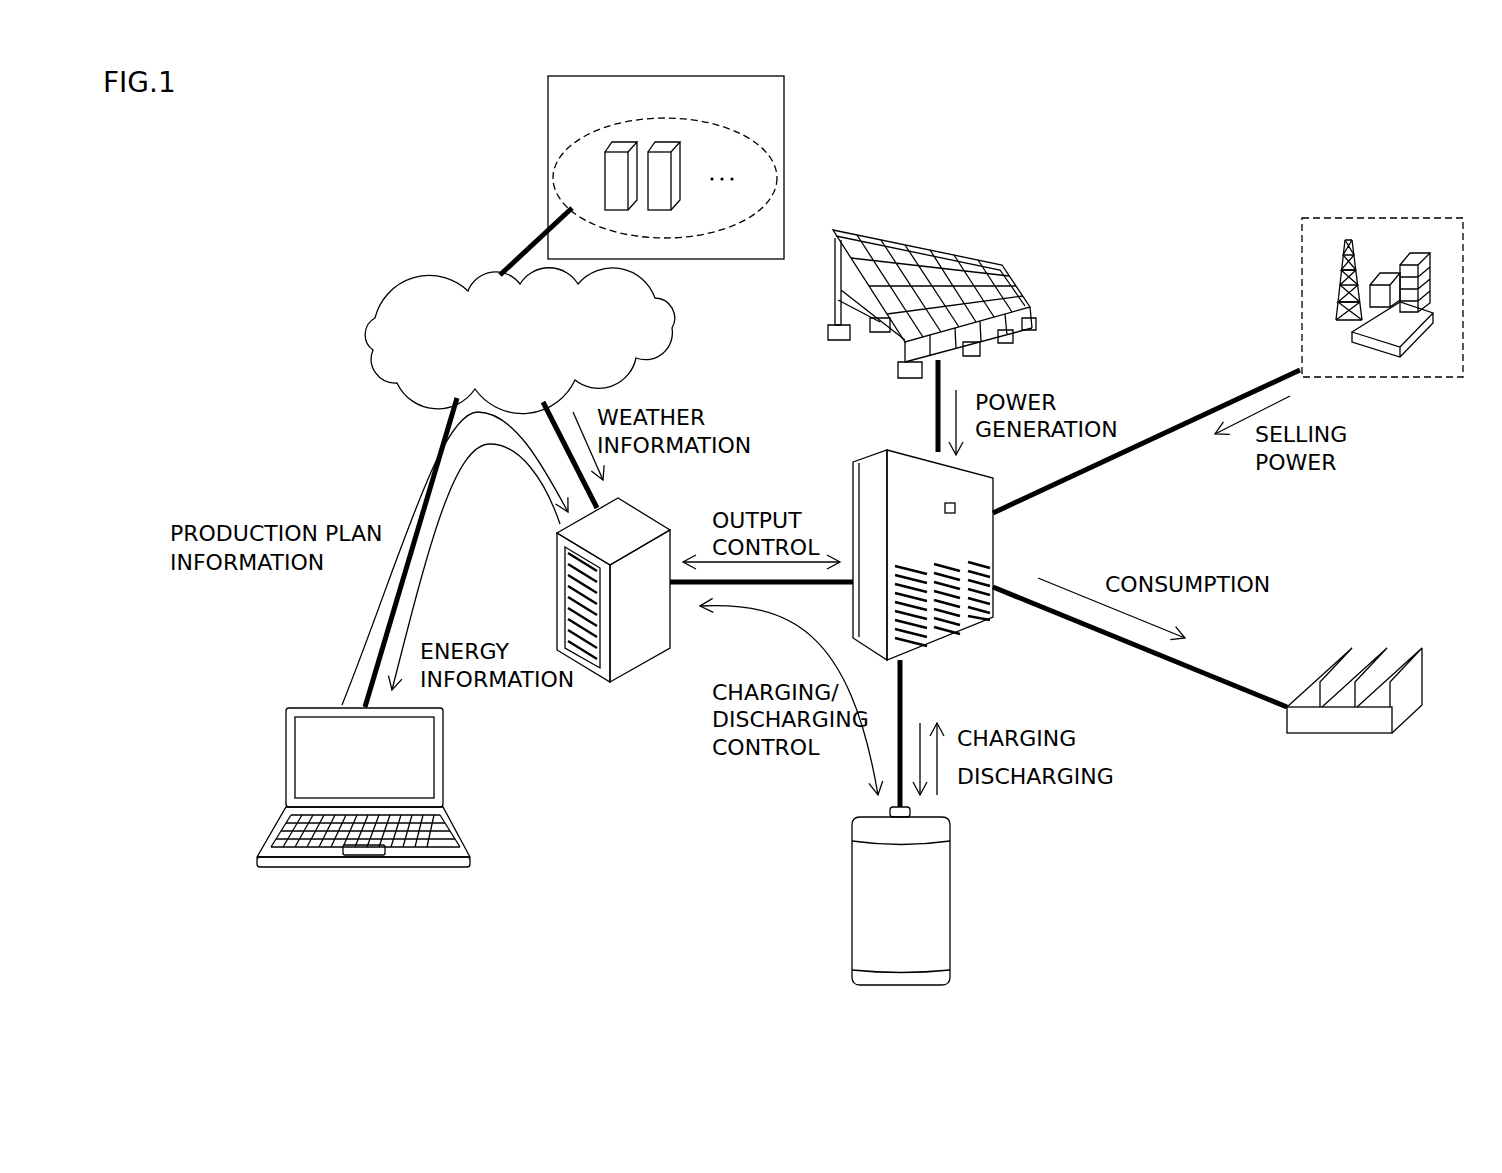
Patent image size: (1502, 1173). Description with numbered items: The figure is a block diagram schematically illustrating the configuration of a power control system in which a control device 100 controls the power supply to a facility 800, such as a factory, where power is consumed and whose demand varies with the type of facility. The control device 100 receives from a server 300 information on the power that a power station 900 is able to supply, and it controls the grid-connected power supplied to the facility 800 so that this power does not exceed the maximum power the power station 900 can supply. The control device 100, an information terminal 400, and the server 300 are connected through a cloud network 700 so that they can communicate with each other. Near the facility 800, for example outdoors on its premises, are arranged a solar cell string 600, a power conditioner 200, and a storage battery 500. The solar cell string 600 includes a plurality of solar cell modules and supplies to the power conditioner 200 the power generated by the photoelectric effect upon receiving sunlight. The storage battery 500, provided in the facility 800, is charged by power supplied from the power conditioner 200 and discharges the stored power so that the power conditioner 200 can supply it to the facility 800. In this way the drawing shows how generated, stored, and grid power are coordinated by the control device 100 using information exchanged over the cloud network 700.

The control device 100 is at (645, 515).
The power conditioner 200 is at (882, 456).
The server 300 is at (784, 98).
The information terminal 400 is at (443, 738).
The storage battery 500 is at (950, 880).
The solar cell string 600 is at (975, 262).
The cloud network 700 is at (690, 336).
The facility 800 is at (1387, 650).
The power station 900 is at (1395, 218).